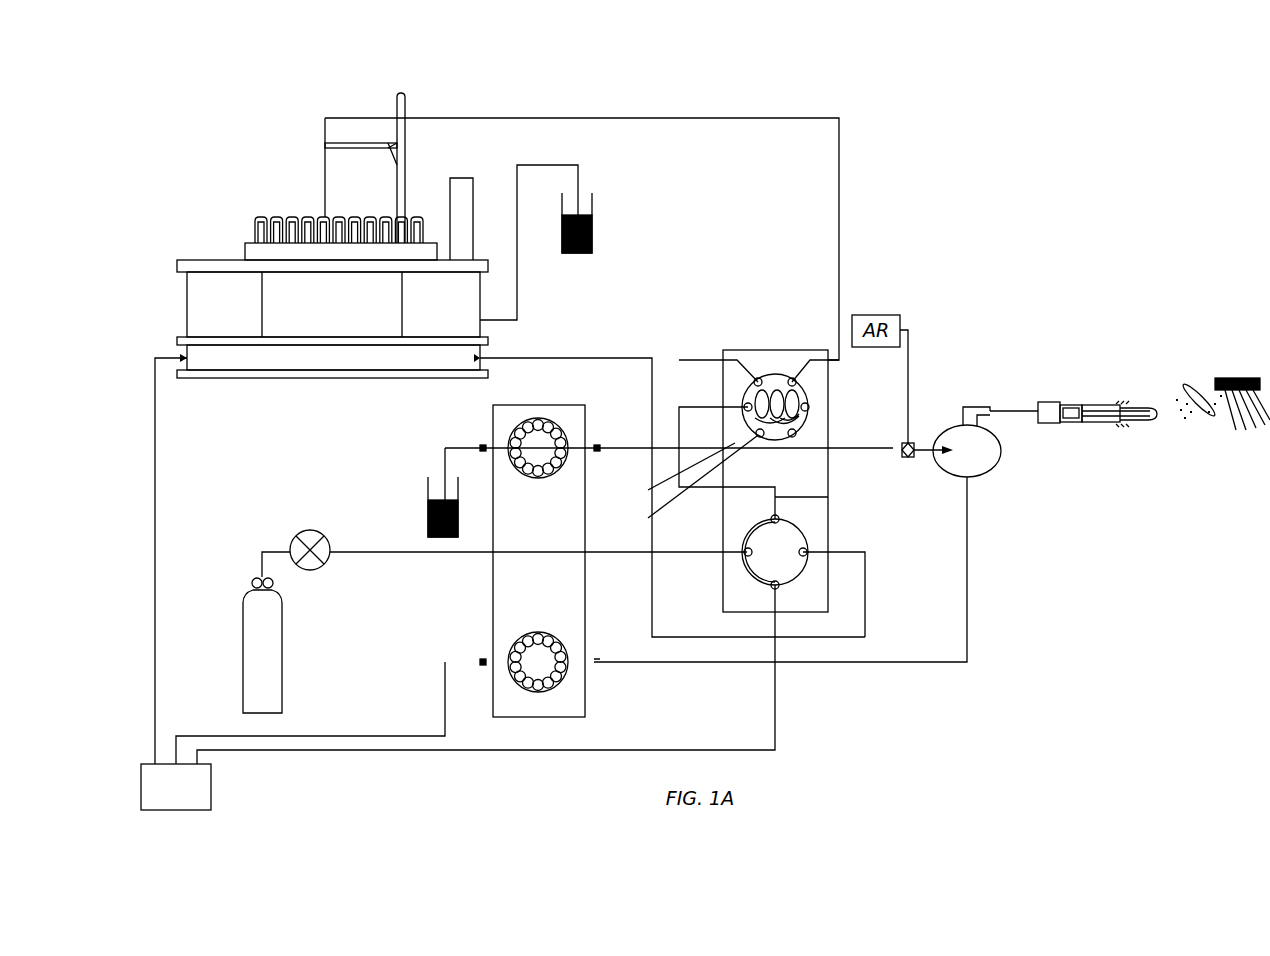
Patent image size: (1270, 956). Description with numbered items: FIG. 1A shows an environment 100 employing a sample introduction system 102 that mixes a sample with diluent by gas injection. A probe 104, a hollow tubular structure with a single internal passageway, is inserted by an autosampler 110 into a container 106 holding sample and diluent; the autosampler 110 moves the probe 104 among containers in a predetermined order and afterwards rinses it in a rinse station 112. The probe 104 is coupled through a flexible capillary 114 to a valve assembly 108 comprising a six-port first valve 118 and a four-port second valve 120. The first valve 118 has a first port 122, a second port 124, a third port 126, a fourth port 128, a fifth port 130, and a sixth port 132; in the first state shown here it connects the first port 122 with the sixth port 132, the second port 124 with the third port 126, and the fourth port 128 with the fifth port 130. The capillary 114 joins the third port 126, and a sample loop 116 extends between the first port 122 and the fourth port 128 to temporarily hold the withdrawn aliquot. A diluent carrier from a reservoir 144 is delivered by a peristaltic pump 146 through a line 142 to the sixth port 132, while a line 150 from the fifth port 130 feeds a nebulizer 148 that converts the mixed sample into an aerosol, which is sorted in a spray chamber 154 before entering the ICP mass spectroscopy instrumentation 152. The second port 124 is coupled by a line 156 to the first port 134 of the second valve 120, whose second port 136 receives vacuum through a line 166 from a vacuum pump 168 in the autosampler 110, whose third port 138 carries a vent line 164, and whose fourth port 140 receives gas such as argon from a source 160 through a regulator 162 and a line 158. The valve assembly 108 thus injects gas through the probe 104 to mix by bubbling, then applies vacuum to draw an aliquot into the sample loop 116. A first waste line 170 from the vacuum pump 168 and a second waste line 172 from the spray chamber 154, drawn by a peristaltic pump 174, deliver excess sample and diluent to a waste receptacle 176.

The environment 100 is at (1090, 185).
The sample introduction system 102 is at (770, 100).
The probe 104 is at (325, 185).
The container 106 is at (255, 222).
The valve assembly 108 is at (753, 345).
The autosampler 110 is at (468, 173).
The rinse station 112 is at (473, 200).
The capillary 114 is at (545, 117).
The sample loop 116 is at (767, 440).
The first valve 118 is at (777, 375).
The second valve 120 is at (810, 533).
The first port 122 is at (747, 407).
The second port 124 is at (745, 383).
The third port 126 is at (808, 380).
The fourth port 128 is at (811, 404).
The fifth port 130 is at (803, 428).
The sixth port 132 is at (680, 487).
The first port 134 is at (772, 520).
The second port 136 is at (812, 548).
The third port 138 is at (777, 585).
The fourth port 140 is at (748, 558).
The line 142 is at (668, 474).
The reservoir 144 is at (430, 520).
The peristaltic pump 146 is at (552, 425).
The nebulizer 148 is at (912, 438).
The line 150 is at (845, 452).
The ICP mass spectroscopy instrumentation 152 is at (1086, 380).
The spray chamber 154 is at (991, 403).
The line 156 is at (778, 496).
The line 158 is at (450, 556).
The source 160 is at (282, 630).
The regulator 162 is at (305, 530).
The vent line 164 is at (777, 692).
The line 166 is at (565, 358).
The vacuum pump 168 is at (308, 372).
The first waste line 170 is at (156, 455).
The second waste line 172 is at (968, 580).
The peristaltic pump 174 is at (557, 632).
The waste receptacle 176 is at (211, 780).